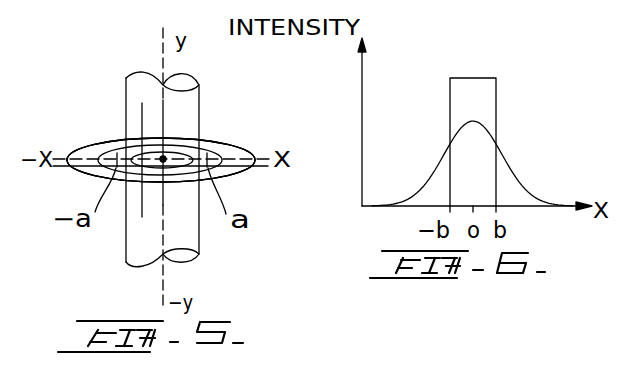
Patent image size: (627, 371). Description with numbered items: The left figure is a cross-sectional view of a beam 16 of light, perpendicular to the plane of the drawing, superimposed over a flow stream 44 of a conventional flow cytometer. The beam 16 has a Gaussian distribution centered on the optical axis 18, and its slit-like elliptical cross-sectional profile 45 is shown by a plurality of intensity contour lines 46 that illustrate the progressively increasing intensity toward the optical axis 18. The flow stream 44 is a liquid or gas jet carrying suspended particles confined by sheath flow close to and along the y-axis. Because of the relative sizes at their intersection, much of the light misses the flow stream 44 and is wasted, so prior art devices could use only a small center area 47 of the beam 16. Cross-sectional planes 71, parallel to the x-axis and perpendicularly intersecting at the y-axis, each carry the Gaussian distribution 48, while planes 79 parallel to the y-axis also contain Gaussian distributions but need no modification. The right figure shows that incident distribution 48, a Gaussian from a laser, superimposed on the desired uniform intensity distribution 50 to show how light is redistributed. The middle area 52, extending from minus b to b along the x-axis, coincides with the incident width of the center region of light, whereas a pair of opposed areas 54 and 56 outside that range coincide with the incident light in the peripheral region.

In FIG. 5, the beam of light 16 is at (78, 150).
In FIG. 5, the optical axis 18 is at (161, 158).
In FIG. 5, the flow stream 44 is at (200, 90).
In FIG. 5, the elliptical cross-sectional profile 45 is at (222, 152).
In FIG. 5, the intensity contour lines 46 is at (246, 153).
In FIG. 5, the center area of the beam 47 is at (183, 149).
In FIG. 5, the cross-sectional plane 71 is at (233, 176).
In FIG. 5, the planes parallel to the y-axis 79 is at (141, 212).
In FIG. 6, the incident distribution 48 is at (537, 198).
In FIG. 6, the uniform intensity distribution 50 is at (496, 96).
In FIG. 6, the middle area 52 is at (473, 157).
In FIG. 6, the opposed area 54 is at (438, 203).
In FIG. 6, the opposed area 56 is at (499, 195).